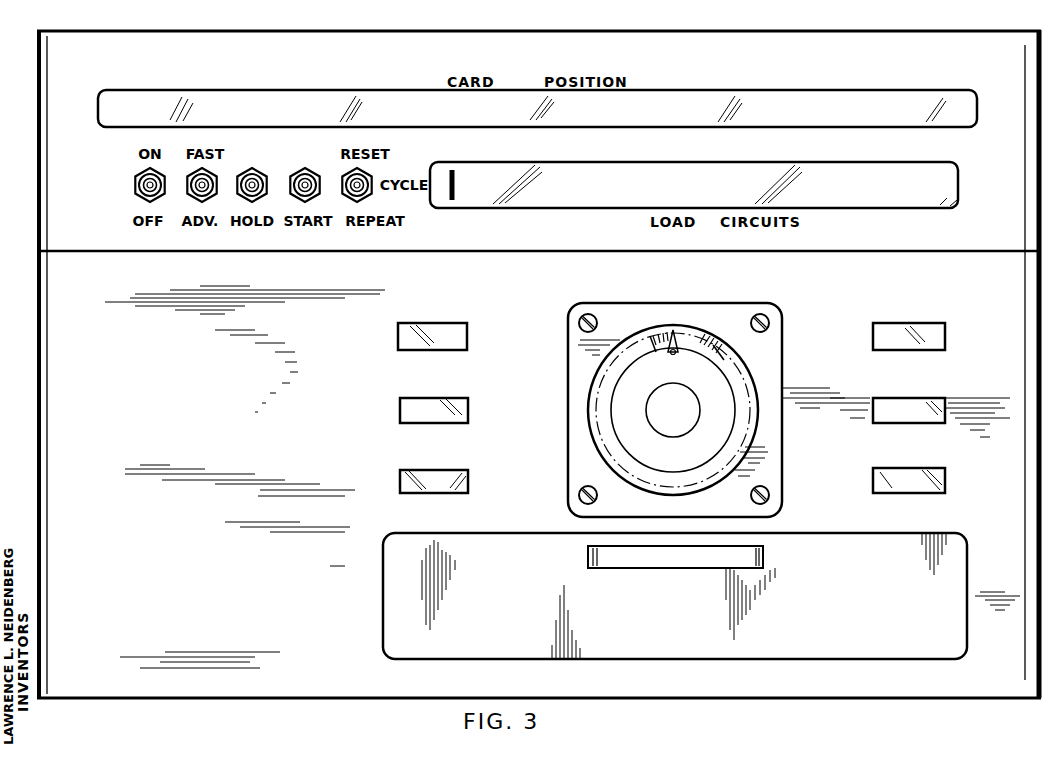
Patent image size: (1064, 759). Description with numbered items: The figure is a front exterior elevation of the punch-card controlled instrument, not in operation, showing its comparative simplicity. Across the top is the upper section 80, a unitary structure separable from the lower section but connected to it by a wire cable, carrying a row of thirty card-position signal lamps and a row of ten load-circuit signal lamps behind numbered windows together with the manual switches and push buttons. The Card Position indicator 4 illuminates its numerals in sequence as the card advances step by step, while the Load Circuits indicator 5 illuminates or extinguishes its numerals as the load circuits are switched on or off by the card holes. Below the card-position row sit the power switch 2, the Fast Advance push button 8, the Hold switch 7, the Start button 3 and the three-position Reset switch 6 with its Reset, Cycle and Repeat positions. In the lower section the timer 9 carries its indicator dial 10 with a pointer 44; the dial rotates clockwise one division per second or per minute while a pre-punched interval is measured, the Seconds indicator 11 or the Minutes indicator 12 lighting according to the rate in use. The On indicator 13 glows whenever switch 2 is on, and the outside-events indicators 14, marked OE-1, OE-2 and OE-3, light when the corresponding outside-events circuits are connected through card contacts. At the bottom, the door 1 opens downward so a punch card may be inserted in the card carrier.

The upper section 80 is at (48, 98).
The Card Position indicator 4 is at (192, 90).
The power switch 2 is at (140, 186).
The Fast Advance push button 8 is at (204, 185).
The Hold switch 7 is at (253, 180).
The Start button 3 is at (307, 180).
The Reset switch 6 is at (362, 182).
The Load Circuits indicator 5 is at (948, 161).
The timer 9 is at (655, 398).
The pointer 44 is at (677, 333).
The indicator dial 10 is at (612, 375).
The Minutes indicator 12 is at (398, 331).
The Seconds indicator 11 is at (400, 408).
The On indicator 13 is at (400, 472).
The outside-events indicators 14 is at (935, 398).
The door 1 is at (882, 650).